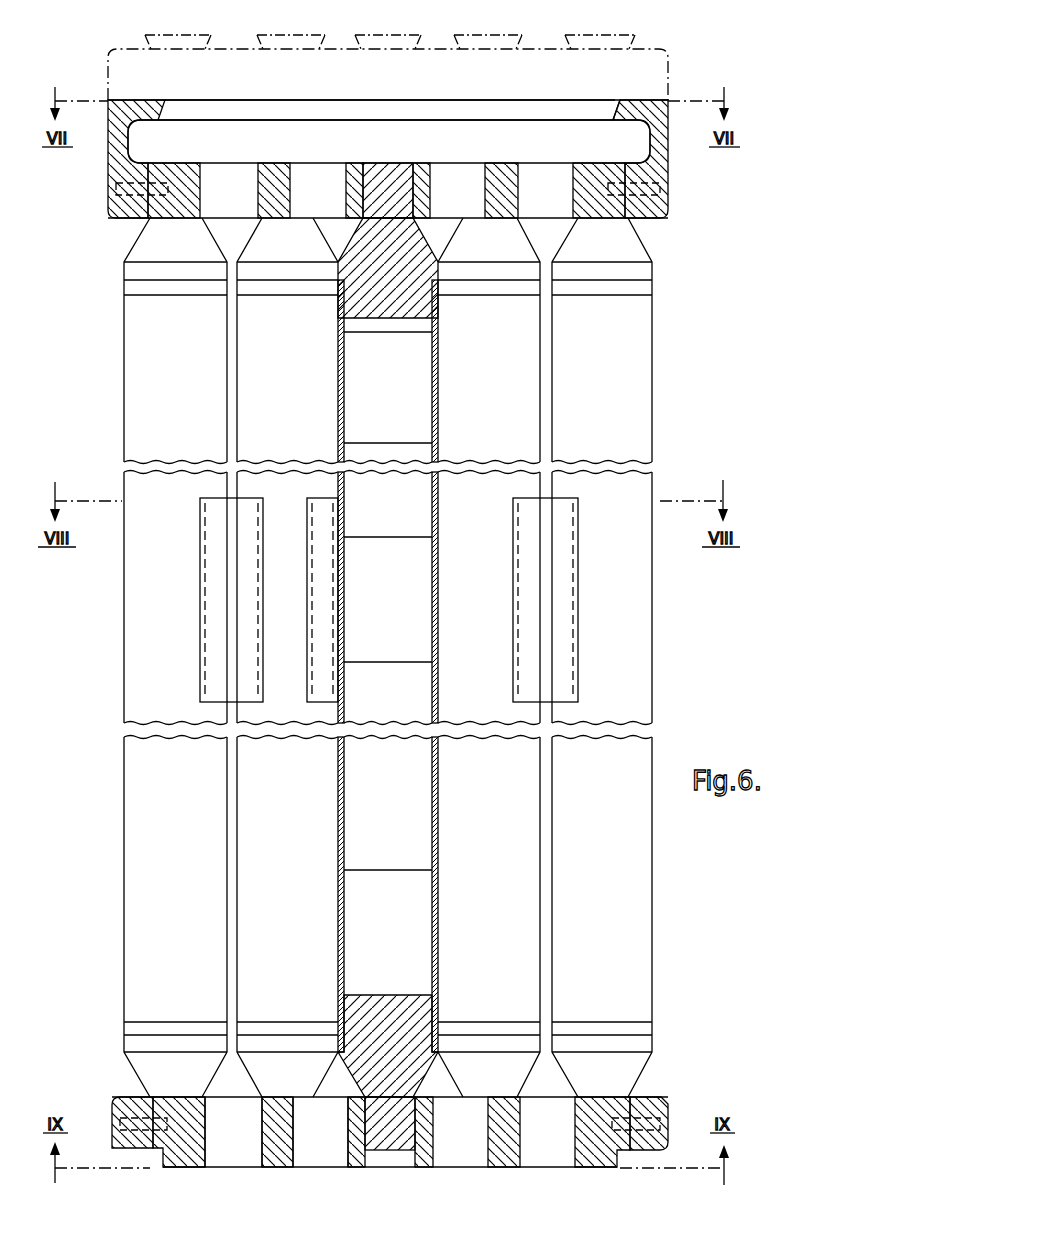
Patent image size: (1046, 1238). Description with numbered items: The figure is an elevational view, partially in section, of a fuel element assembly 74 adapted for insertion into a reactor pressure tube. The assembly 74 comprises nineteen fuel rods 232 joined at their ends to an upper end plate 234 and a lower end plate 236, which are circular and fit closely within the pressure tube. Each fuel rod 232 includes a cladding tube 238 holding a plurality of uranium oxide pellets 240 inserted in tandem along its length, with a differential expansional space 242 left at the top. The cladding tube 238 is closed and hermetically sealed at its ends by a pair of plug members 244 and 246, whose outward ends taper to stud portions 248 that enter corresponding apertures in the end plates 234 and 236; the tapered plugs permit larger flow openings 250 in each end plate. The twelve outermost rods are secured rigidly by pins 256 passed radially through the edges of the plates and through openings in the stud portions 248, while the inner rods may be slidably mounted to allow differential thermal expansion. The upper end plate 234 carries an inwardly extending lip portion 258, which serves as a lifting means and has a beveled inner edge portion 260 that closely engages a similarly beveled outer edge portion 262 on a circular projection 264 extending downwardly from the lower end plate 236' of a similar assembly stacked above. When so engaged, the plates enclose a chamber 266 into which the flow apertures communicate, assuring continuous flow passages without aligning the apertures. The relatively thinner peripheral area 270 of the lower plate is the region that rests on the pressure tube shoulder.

The fuel element assembly 74 is at (90, 69).
The fuel rod 232 is at (652, 362).
The upper end plate 234 is at (668, 171).
The lower end plate 236 is at (412, 1119).
The lower end plate of a similar fuel element assembly 236' is at (424, 67).
The cladding tube 238 is at (440, 382).
The pellets 240 is at (418, 523).
The differential expansional space 242 is at (344, 332).
The plug member 244 is at (357, 248).
The plug member 246 is at (410, 1012).
The stud portion 248 is at (378, 185).
The flow openings 250 is at (212, 1153).
The pins 256 is at (108, 207).
The lip portion 258 is at (625, 111).
The beveled inner edge portion 260 is at (540, 113).
The beveled outer edge portion 262 is at (272, 111).
The circular projection 264 is at (503, 1168).
The chamber 266 is at (203, 133).
The peripheral area 270 is at (137, 1150).